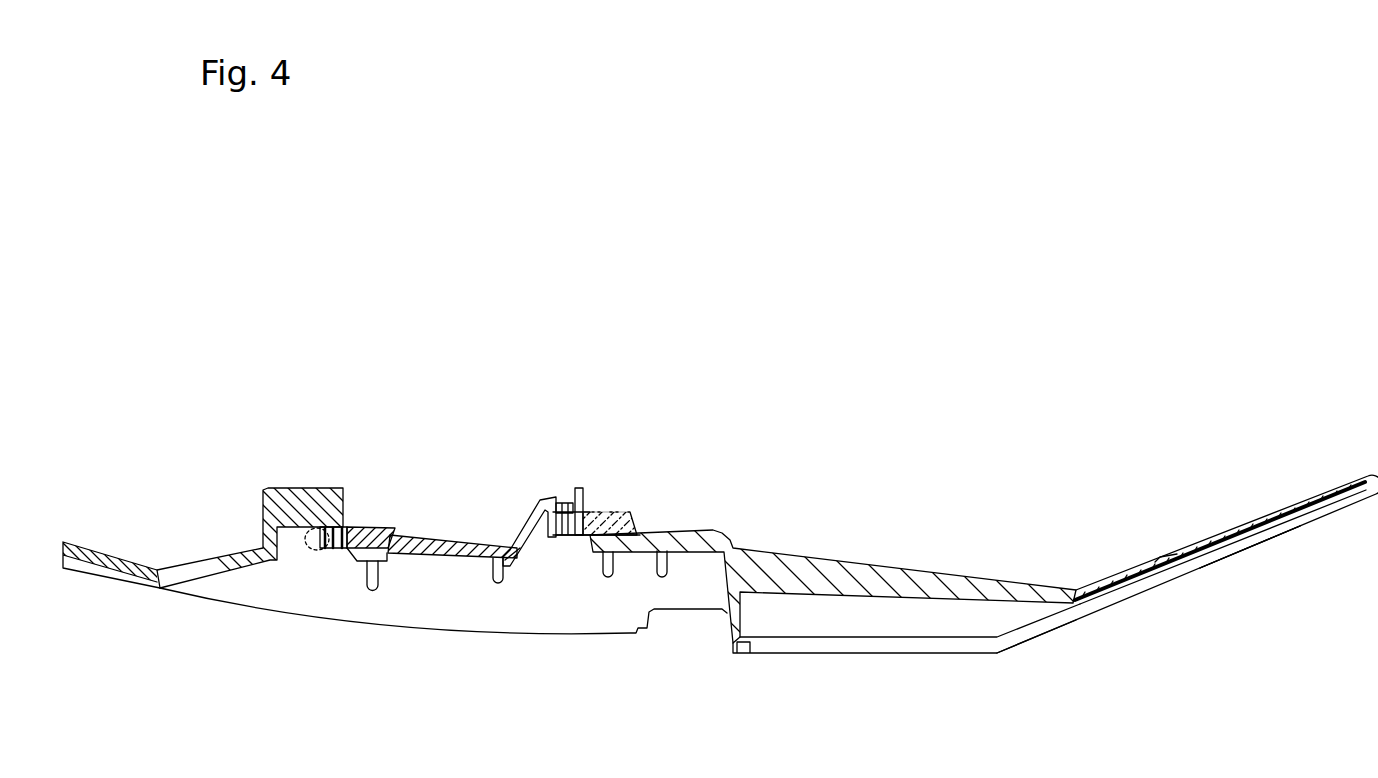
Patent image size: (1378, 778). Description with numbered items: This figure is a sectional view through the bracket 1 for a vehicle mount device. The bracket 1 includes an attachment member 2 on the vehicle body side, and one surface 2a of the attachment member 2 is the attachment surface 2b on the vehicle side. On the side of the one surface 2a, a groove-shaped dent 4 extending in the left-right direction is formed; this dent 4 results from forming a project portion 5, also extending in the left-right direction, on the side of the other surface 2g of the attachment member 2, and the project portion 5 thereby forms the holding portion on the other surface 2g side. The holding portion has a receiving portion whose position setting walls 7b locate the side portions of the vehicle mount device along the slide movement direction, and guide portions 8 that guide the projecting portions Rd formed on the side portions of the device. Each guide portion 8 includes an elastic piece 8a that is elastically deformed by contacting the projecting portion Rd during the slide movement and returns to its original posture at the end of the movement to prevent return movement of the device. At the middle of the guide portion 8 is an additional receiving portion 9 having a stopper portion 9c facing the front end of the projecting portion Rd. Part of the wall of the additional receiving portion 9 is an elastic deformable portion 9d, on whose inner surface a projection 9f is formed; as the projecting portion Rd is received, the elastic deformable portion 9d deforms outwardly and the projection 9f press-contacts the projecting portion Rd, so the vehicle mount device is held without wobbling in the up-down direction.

The bracket 1 is at (1253, 482).
The attachment member 2 is at (1318, 492).
The one surface 2a is at (1222, 560).
The attachment surface 2b is at (1250, 547).
The other surface 2g is at (1163, 557).
The dent 4 is at (455, 615).
The project portion 5 is at (707, 529).
The position setting wall 7b is at (288, 543).
The guide portion 8 is at (492, 530).
The elastic piece 8a is at (420, 530).
The additional receiving portion 9 is at (543, 498).
The stopper portion 9c is at (546, 555).
The elastic deformable portion 9d is at (563, 500).
The projection 9f is at (568, 537).
The projecting portion Rd is at (388, 525).